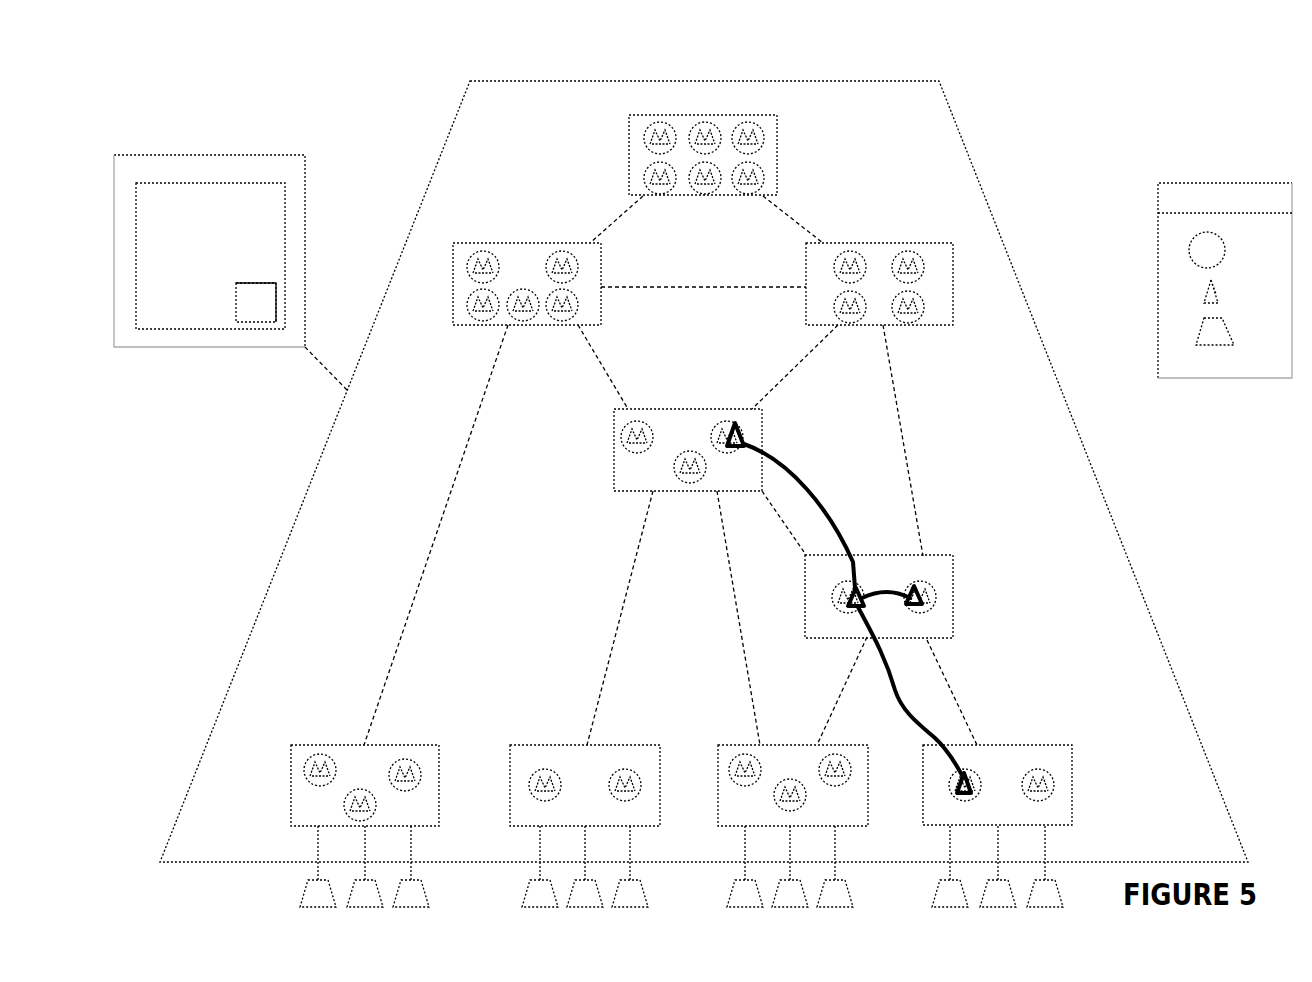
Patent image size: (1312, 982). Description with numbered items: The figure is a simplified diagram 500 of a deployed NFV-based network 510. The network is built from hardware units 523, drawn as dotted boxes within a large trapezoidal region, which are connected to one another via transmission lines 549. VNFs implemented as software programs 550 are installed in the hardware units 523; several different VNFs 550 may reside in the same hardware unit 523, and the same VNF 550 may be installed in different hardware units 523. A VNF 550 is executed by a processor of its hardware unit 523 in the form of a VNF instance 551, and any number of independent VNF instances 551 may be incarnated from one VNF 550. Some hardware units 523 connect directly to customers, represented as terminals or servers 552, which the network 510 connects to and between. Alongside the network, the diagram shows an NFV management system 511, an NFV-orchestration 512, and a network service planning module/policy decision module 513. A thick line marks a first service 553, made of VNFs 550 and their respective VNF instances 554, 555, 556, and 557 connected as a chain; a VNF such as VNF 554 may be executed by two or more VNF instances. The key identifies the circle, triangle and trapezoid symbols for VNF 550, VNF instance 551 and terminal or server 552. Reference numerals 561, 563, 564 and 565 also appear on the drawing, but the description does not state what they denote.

The diagram 500 is at (1202, 102).
The NFV-based network 510 is at (482, 78).
The NFV management system 511 is at (190, 152).
The NFV-orchestration 512 is at (248, 181).
The network service planning module/policy decision module 513 is at (250, 283).
The hardware unit 523 is at (635, 113).
The transmission line 549 is at (614, 216).
The VNF 550 is at (1222, 250).
The VNF instance 551 is at (1218, 293).
The terminal or server 552 is at (1228, 335).
The first service 553 is at (907, 720).
The VNF instance 554 is at (948, 777).
The VNF instance 555 is at (850, 618).
The VNF instance 556 is at (938, 620).
The VNF instance 557 is at (760, 443).
The end node 561 is at (932, 785).
The node group 563 is at (715, 408).
The link 564 is at (850, 330).
The source node 565 is at (748, 427).